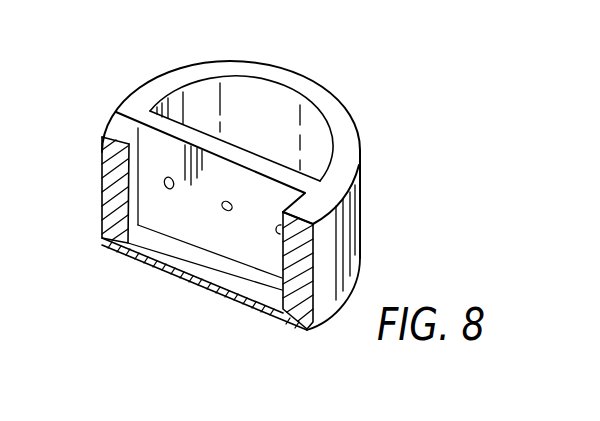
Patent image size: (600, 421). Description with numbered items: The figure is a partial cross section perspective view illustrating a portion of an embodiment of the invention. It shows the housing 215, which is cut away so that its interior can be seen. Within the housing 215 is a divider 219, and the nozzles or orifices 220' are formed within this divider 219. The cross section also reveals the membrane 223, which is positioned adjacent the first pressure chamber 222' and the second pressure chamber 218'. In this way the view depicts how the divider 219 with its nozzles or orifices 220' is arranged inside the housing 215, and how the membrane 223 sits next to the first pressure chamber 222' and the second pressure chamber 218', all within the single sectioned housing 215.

The housing 215 is at (202, 63).
The second pressure chamber 218' is at (175, 220).
The divider 219 is at (203, 138).
The nozzles or orifices 220' is at (199, 273).
The first pressure chamber 222' is at (282, 121).
The membrane 223 is at (207, 284).